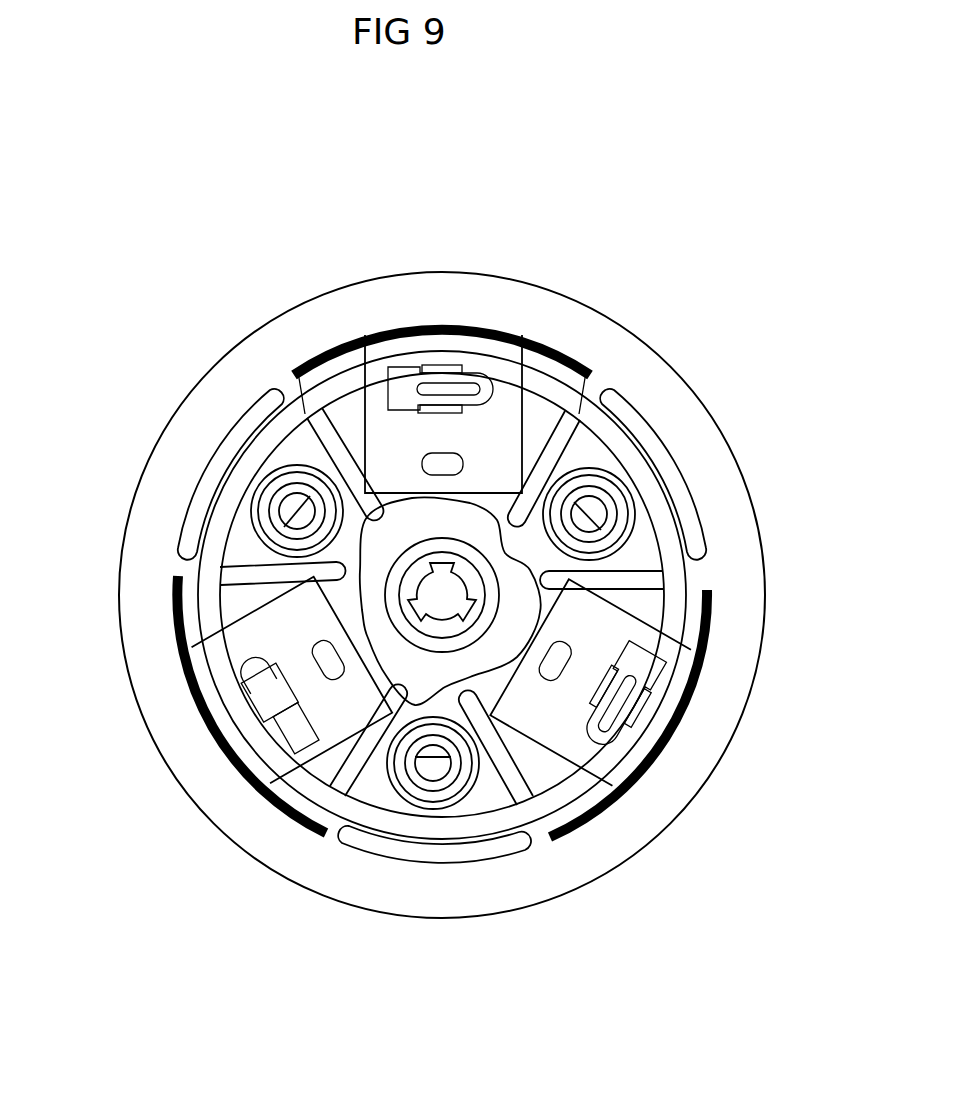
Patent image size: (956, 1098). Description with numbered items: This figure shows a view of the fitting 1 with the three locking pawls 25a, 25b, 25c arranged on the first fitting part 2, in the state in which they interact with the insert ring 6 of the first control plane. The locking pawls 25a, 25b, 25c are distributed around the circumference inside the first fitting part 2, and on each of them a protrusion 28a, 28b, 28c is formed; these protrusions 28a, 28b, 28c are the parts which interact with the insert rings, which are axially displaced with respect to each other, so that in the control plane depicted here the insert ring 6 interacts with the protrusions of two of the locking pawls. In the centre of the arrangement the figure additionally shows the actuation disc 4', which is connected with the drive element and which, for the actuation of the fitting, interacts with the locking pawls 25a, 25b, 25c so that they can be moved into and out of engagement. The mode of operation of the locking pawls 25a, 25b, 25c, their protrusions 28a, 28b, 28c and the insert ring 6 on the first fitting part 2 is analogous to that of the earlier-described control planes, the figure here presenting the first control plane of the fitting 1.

The actuating device assembly 1 is at (176, 335).
The first fitting part 2 is at (713, 465).
The insert ring 6 is at (322, 365).
The actuation disc 4' is at (484, 481).
The locking pawl 25a is at (460, 345).
The locking pawl 25b is at (258, 763).
The locking pawl 25c is at (667, 707).
The protrusion 28a is at (394, 385).
The protrusion 28b is at (260, 710).
The protrusion 28c is at (613, 740).